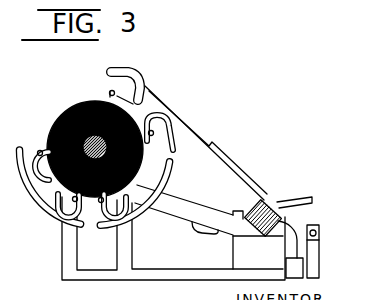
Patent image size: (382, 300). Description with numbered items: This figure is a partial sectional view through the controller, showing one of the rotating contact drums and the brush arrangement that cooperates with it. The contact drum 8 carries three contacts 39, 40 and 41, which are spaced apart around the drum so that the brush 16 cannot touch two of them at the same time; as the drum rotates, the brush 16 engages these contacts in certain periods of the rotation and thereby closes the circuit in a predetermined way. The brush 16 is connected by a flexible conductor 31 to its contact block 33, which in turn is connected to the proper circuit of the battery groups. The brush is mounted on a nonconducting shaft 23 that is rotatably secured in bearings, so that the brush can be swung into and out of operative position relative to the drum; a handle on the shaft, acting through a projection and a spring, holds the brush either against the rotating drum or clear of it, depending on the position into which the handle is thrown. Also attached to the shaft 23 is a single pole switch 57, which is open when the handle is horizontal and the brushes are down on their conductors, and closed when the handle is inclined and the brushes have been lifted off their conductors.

The contact drum 8 is at (57, 125).
The contact 39 is at (138, 82).
The brush 16 is at (225, 158).
The single pole switch 57 is at (298, 198).
The flexible conductor 31 is at (305, 219).
The nonconducting shaft 23 is at (258, 236).
The contact block 33 is at (294, 268).
The contact 41 is at (40, 201).
The contact 40 is at (140, 204).